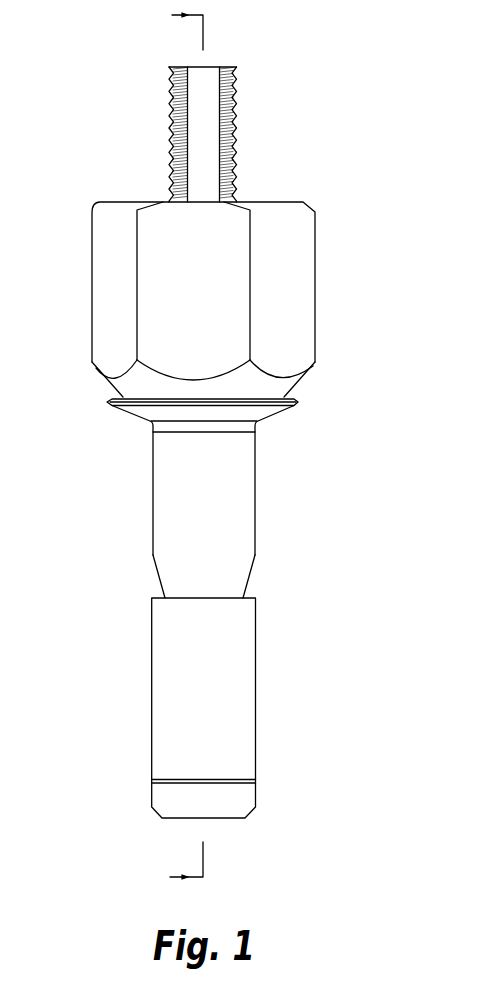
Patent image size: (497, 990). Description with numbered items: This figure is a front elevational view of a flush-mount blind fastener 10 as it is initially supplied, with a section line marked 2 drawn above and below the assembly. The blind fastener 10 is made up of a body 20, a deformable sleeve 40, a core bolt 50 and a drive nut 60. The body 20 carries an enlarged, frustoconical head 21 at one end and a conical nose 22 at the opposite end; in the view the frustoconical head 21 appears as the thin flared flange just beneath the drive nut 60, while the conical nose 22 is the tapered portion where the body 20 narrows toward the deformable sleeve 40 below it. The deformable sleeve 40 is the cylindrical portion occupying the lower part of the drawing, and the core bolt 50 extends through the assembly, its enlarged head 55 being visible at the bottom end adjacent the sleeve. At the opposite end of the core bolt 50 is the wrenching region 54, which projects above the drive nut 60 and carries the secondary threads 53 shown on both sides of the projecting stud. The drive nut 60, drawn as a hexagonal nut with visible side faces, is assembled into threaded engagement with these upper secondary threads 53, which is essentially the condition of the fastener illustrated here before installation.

The section line 2- 2 is at (199, 450).
The blind fastener 10 is at (243, 450).
The body 20 is at (243, 500).
The frustoconical head 21 is at (275, 408).
The conical nose 22 is at (238, 571).
The deformable sleeve 40 is at (167, 678).
The core bolt 50 is at (162, 793).
The secondary threads 53 is at (235, 128).
The wrenching region 54 is at (200, 130).
The enlarged head 55 is at (247, 797).
The drive nut 60 is at (285, 252).